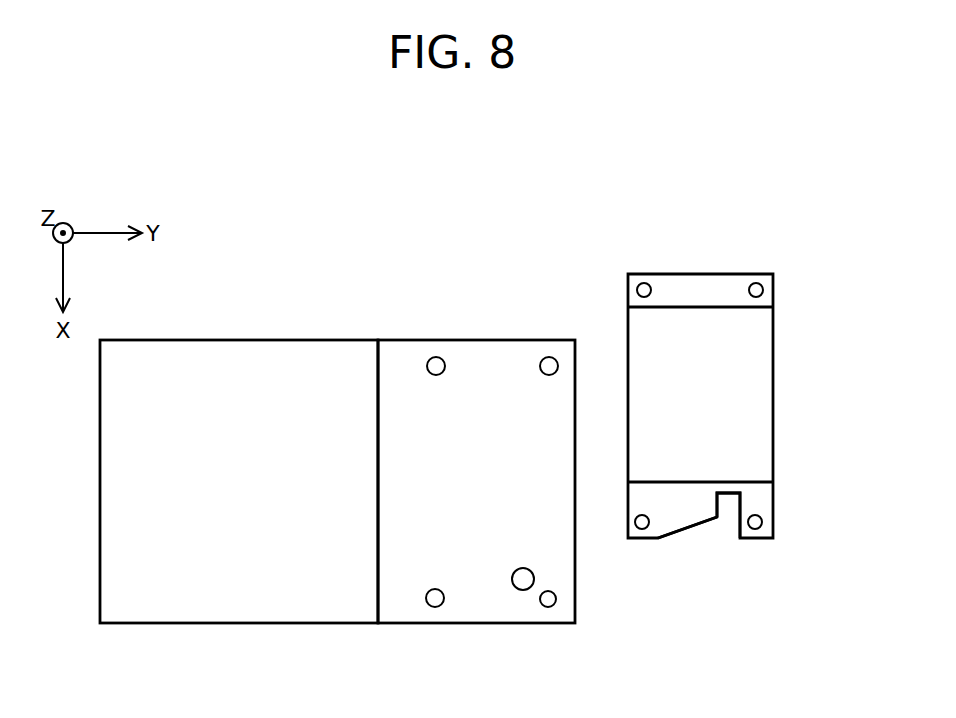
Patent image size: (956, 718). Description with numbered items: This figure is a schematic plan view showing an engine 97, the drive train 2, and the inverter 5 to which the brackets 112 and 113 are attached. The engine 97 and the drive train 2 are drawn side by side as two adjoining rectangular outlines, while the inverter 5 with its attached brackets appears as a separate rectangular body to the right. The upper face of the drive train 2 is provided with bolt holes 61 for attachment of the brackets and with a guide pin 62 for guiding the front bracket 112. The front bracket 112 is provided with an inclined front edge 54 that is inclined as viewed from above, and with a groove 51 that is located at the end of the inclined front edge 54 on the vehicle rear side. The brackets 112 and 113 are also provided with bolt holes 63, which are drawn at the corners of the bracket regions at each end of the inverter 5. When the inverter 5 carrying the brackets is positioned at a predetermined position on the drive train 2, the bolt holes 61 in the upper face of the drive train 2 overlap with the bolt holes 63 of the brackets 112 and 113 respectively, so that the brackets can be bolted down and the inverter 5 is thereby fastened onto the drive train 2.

The engine 97 is at (268, 357).
The drive train 2 is at (400, 357).
The bolt holes 61 is at (439, 357).
The guide pin 62 is at (523, 590).
The bolt holes 63 is at (635, 522).
The inverter 5 is at (760, 355).
The bracket 113 is at (698, 288).
The front bracket 112 is at (757, 493).
The groove 51 is at (728, 512).
The inclined front edge 54 is at (692, 527).